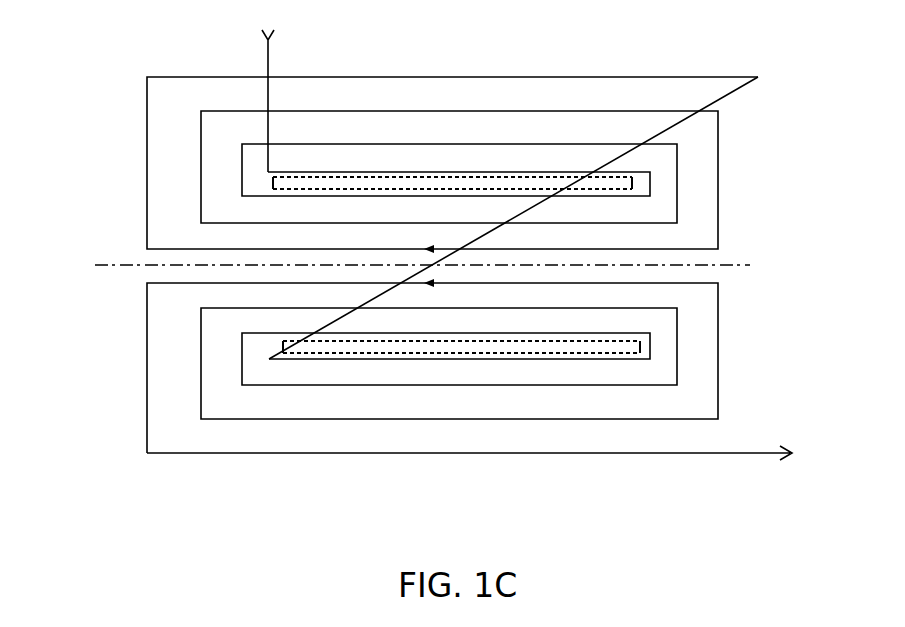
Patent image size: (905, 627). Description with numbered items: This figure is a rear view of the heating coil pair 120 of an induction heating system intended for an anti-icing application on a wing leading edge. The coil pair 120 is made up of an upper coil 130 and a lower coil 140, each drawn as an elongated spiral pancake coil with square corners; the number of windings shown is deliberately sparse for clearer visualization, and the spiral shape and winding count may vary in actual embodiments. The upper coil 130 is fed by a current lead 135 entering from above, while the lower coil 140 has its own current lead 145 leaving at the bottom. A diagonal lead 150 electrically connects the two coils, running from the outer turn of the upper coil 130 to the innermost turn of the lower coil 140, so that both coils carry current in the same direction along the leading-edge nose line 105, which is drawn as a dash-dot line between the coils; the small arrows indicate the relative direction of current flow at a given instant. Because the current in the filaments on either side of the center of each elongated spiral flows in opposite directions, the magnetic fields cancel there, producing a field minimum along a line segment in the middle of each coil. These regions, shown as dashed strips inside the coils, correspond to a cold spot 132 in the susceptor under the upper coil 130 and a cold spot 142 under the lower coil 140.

The heating coil pair 120 is at (192, 62).
The current lead 135 is at (270, 65).
The upper coil 130 is at (718, 208).
The cold spot 132 is at (273, 183).
The lead 150 is at (727, 96).
The leading-edge nose line 105 is at (442, 261).
The lower coil 140 is at (718, 397).
The cold spot 142 is at (370, 353).
The current lead 145 is at (494, 451).